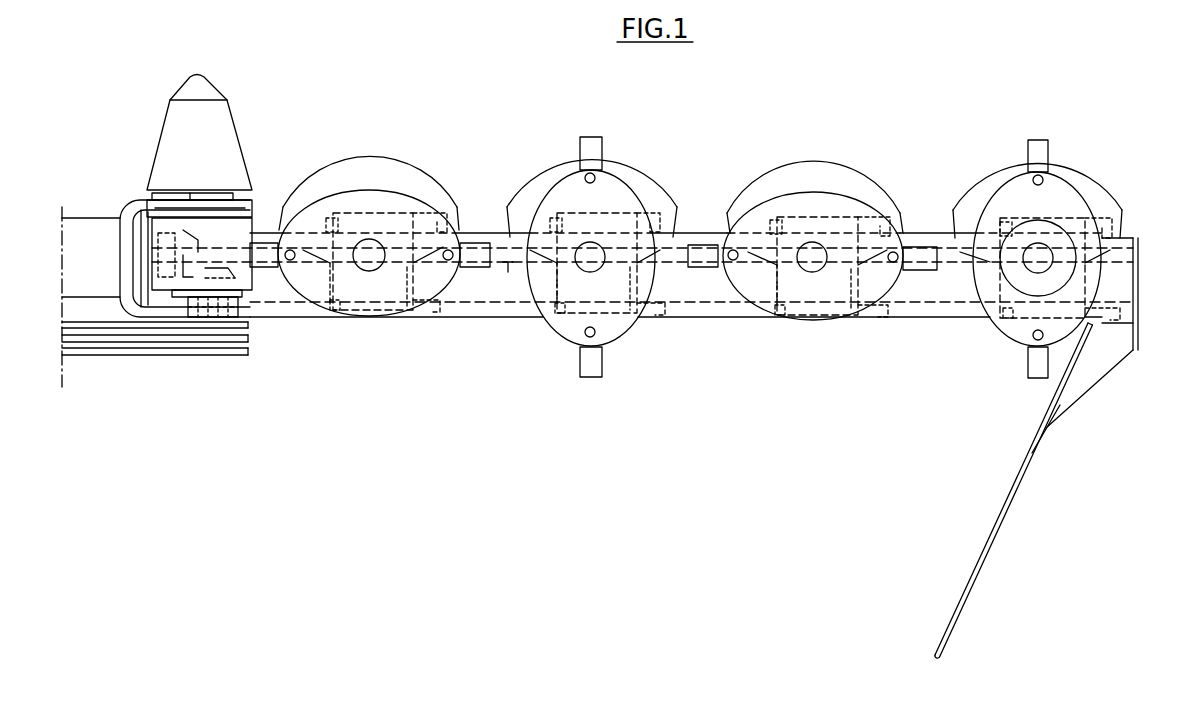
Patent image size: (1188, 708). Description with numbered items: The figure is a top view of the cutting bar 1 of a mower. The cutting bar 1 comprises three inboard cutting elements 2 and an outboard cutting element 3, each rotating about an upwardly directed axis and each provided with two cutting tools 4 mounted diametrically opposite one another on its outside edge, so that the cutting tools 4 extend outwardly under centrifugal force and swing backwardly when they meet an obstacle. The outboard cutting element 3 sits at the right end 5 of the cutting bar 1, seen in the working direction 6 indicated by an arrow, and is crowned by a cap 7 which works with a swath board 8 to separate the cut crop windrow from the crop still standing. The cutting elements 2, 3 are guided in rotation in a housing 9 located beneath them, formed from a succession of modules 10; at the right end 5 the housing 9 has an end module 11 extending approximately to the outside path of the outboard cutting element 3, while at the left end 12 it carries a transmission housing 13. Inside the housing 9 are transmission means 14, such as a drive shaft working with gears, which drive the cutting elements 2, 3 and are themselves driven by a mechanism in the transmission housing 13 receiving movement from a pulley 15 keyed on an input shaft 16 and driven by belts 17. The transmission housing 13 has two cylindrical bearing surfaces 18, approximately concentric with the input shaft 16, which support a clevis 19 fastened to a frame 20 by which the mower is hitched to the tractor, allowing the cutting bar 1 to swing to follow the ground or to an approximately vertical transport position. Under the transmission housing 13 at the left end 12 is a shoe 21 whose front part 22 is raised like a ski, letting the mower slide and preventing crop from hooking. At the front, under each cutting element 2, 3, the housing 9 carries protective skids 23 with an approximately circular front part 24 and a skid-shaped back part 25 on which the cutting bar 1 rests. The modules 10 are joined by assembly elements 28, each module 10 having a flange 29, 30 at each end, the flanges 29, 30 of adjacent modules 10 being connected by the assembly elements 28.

The cutting bar 1 is at (768, 84).
The inboard cutting element 2 is at (447, 290).
The outboard cutting element 3 is at (1000, 333).
The cutting tool 4 is at (267, 243).
The right end 5 is at (1167, 200).
The working direction 6 is at (458, 28).
The cap 7 is at (1062, 207).
The swath board 8 is at (997, 523).
The housing 9 is at (490, 322).
The module 10 is at (305, 318).
The end module 11 is at (1120, 296).
The left end 12 is at (122, 167).
The transmission housing 13 is at (255, 283).
The transmission means 14 is at (506, 281).
The pulley 15 is at (180, 354).
The input shaft 16 is at (213, 310).
The belts 17 is at (117, 324).
The cylindrical bearing surface 18 is at (233, 190).
The clevis 19 is at (133, 207).
The frame 20 is at (75, 217).
The shoe 21 is at (242, 130).
The front part of shoe 22 is at (160, 132).
The protective skid 23 is at (318, 184).
The front part of protective skid 24 is at (372, 156).
The back part of protective skid 25 is at (340, 272).
The assembly element 28 is at (368, 217).
The flange 29 is at (388, 213).
The flange 30 is at (420, 213).